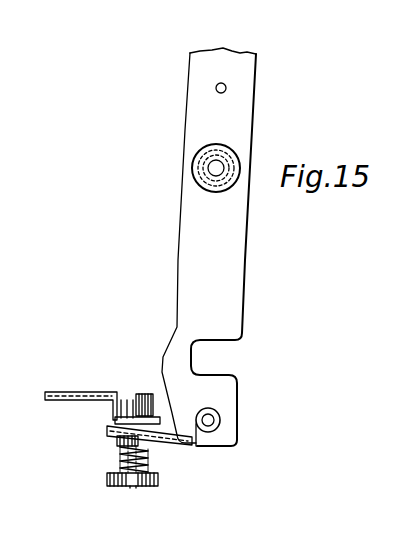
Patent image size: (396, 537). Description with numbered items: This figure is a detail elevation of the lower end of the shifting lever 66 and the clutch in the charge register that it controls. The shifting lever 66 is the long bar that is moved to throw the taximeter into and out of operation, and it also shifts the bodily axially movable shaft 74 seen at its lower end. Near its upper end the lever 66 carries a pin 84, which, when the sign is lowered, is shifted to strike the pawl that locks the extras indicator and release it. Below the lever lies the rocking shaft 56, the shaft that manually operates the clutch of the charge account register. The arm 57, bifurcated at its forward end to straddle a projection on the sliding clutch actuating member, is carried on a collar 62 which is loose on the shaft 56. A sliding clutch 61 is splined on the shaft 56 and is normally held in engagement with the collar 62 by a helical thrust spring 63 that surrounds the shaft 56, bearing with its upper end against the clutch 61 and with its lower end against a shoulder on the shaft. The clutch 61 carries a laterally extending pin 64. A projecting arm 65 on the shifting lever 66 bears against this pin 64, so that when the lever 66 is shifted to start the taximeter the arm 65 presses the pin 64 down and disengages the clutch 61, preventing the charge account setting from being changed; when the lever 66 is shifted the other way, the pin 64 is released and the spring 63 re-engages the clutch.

The rocking shaft 56 is at (158, 482).
The arm 57 is at (70, 394).
The clutch 61 is at (116, 440).
The collar 62 is at (140, 389).
The helical thrust spring 63 is at (150, 463).
The pin 64 is at (120, 449).
The projecting arm 65 is at (112, 430).
The shifting lever 66 is at (237, 283).
The axially movable shaft 74 is at (221, 419).
The pin 84 is at (226, 87).